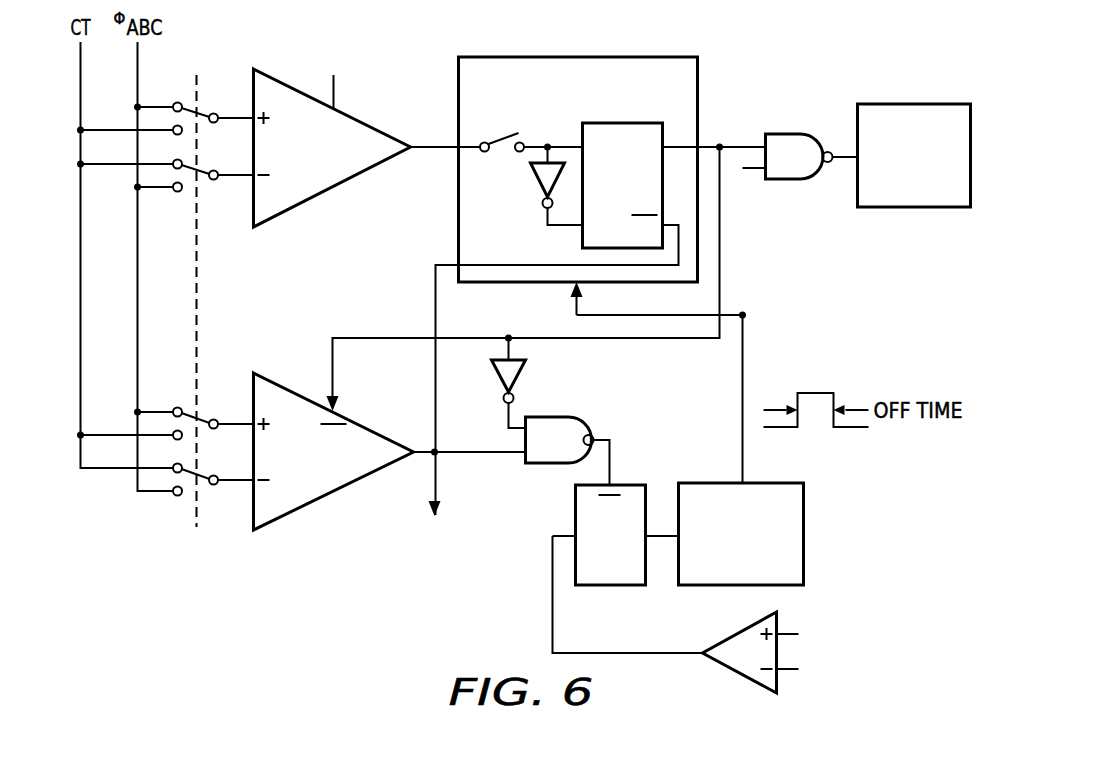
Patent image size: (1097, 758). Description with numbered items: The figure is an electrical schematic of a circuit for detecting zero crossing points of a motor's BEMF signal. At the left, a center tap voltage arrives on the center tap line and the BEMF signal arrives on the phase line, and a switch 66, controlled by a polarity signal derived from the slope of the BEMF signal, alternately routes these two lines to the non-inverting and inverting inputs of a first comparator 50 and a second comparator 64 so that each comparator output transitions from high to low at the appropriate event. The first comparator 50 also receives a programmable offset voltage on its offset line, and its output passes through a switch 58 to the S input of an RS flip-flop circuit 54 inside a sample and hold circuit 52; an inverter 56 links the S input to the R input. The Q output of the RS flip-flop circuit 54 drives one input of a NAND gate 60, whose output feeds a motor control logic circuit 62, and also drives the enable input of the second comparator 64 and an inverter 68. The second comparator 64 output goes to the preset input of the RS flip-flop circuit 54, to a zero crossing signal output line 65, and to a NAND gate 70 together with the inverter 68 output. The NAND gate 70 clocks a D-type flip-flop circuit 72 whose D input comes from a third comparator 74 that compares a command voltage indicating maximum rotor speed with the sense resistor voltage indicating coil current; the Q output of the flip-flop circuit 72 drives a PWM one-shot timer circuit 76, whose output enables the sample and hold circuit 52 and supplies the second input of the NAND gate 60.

The first comparator 50 is at (334, 187).
The sample and hold circuit 52 is at (590, 103).
The RS flip-flop circuit 54 is at (622, 123).
The inverter 56 is at (537, 181).
The switch 58 is at (498, 137).
The two-input NAND gate 60 is at (795, 134).
The motor control logic circuit 62 is at (913, 104).
The second comparator 64 is at (297, 512).
The zero crossing signal output line 65 is at (434, 483).
The switch 66 is at (198, 584).
The inverter 68 is at (501, 380).
The two-input NAND gate 70 is at (548, 417).
The D-type flip-flop circuit 72 is at (609, 585).
The third comparator 74 is at (737, 674).
The PWM one-shot timer circuit 76 is at (803, 532).